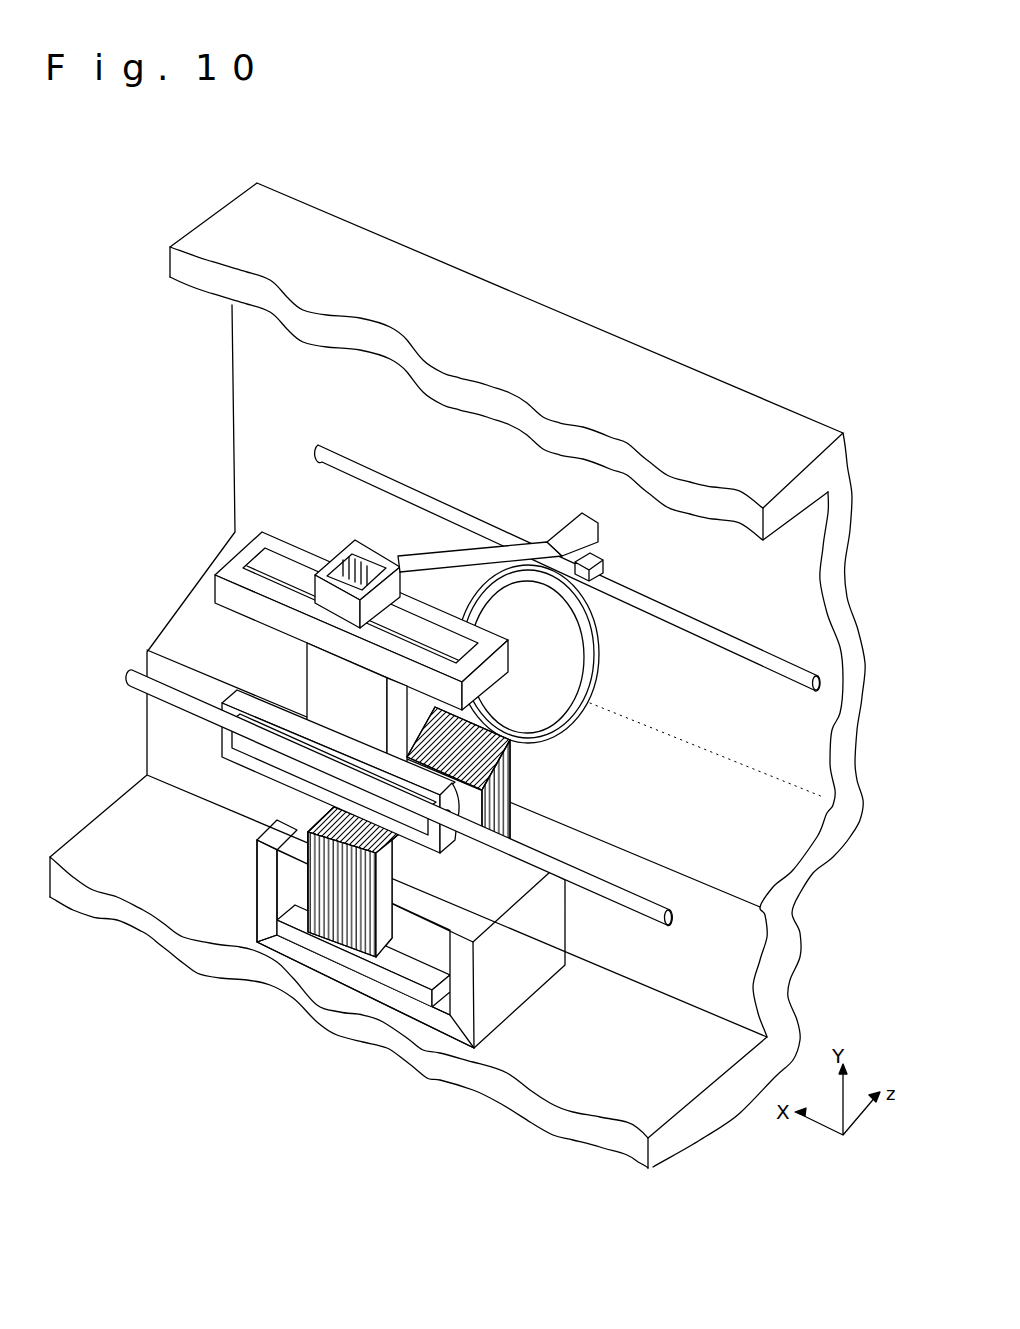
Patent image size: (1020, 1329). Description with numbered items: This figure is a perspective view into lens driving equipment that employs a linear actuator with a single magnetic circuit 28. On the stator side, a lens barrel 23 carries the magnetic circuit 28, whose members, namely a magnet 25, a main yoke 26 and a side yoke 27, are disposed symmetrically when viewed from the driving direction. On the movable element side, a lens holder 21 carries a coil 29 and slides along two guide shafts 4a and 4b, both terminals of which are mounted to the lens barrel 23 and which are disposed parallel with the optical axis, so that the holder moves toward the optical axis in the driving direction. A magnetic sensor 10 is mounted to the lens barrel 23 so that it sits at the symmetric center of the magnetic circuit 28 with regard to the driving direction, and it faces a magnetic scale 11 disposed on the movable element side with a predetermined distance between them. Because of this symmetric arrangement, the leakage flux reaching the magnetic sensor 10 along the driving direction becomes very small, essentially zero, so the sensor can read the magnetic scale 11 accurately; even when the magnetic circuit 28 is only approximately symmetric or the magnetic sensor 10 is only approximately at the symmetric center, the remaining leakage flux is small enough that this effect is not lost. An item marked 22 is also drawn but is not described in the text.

The guide shaft 4a is at (135, 665).
The guide shaft 4b is at (328, 455).
The magnetic sensor 10 is at (335, 552).
The magnetic scale 11 is at (273, 562).
The lens holder 21 is at (500, 563).
The rotary disc 22 is at (542, 640).
The lens barrel 23 is at (588, 1123).
The magnet 25 is at (385, 970).
The main yoke 26 is at (447, 1028).
The side yoke 27 is at (272, 942).
The magnetic circuit 28 is at (303, 1127).
The coil 29 is at (348, 888).